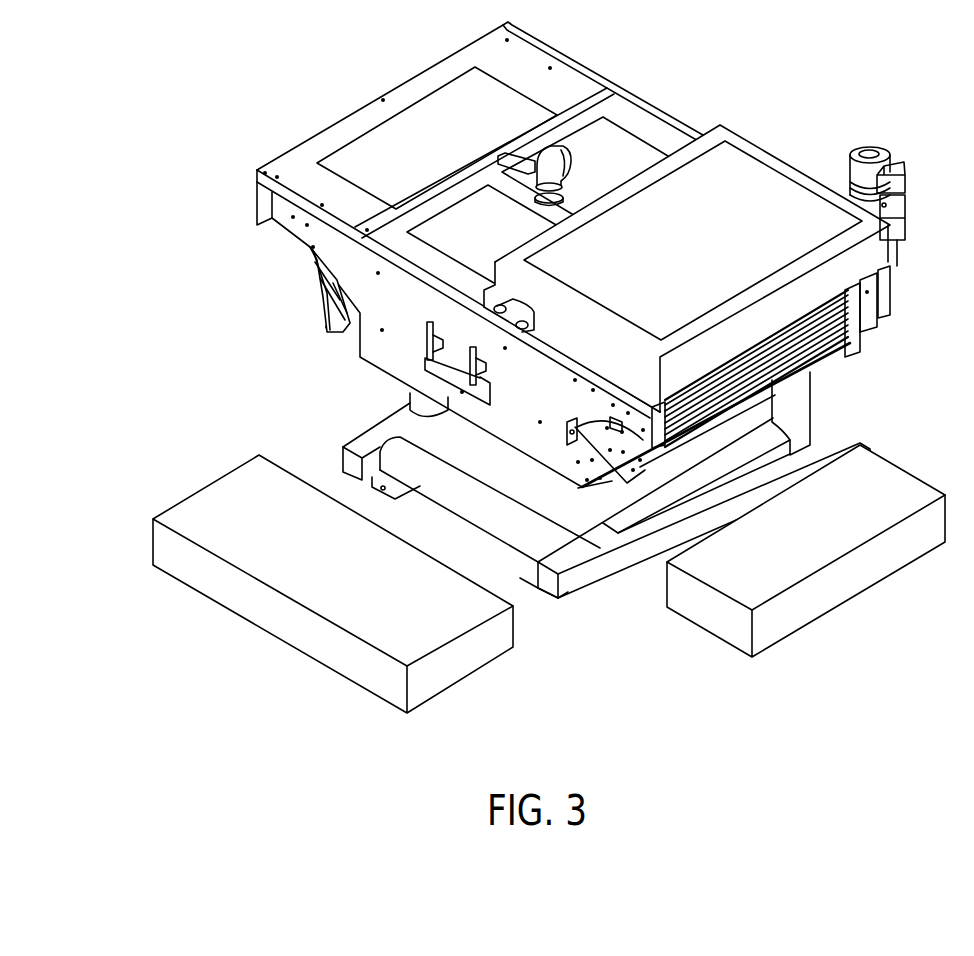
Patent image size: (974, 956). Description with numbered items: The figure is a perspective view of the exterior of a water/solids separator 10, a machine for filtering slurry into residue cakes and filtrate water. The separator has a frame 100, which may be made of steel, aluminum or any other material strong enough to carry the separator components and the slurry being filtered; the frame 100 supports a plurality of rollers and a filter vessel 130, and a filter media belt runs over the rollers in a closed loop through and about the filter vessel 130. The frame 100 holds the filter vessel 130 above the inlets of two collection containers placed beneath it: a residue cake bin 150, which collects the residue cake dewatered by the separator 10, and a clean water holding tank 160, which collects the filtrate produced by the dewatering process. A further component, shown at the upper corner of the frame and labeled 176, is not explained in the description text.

The water/solids separator 10 is at (808, 118).
The frame 100 is at (873, 258).
The motor 176 is at (907, 178).
The filter vessel 130 is at (397, 302).
The residue cake bin 150 is at (885, 478).
The clean water holding tank 160 is at (230, 490).